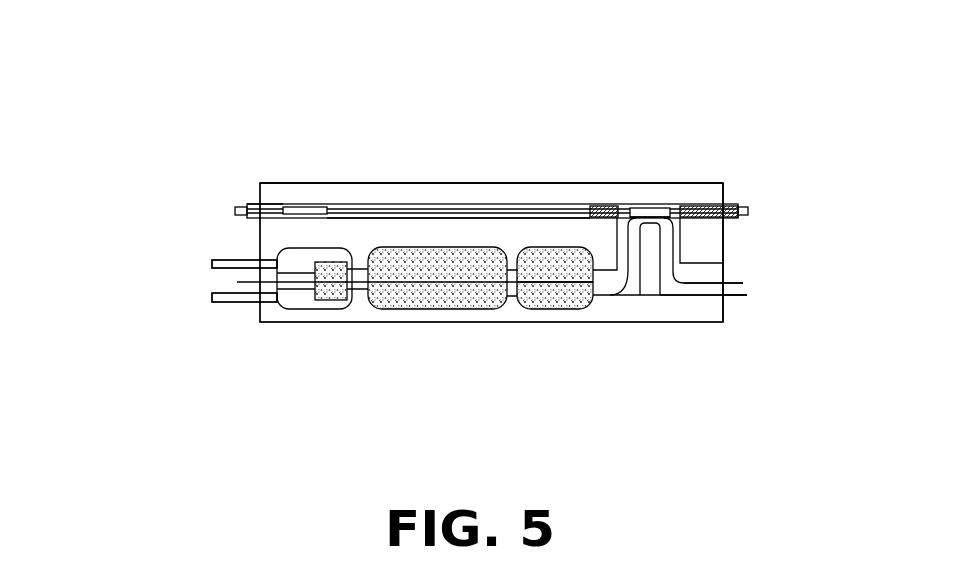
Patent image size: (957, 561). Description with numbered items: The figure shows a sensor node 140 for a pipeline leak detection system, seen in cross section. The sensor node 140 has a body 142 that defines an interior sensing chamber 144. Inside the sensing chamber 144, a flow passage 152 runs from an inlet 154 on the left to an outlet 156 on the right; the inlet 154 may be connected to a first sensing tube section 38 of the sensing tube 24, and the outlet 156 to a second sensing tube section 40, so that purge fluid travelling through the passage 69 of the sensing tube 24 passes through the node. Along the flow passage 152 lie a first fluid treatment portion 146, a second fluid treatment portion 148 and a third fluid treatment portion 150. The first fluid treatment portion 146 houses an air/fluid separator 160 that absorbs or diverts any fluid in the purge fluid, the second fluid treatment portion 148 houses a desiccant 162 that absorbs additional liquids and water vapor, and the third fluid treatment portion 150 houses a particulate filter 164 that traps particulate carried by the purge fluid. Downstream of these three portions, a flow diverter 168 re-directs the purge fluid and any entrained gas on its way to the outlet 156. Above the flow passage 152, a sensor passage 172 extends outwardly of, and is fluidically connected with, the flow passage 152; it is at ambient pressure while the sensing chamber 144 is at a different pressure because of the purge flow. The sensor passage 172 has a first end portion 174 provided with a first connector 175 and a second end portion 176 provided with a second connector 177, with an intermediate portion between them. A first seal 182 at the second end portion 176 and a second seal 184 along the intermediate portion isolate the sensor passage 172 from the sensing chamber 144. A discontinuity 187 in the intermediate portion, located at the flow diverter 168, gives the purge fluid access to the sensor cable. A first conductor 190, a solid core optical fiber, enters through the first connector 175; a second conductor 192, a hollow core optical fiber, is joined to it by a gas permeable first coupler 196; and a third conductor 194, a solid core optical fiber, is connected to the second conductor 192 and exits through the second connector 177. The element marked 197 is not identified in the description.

The sensing tube 24 is at (209, 328).
The first sensing tube section 38 is at (210, 307).
The second sensing tube section 40 is at (737, 316).
The passage 69 is at (222, 282).
The sensor node 140 is at (136, 116).
The body 142 is at (500, 324).
The sensing chamber 144 is at (628, 287).
The first fluid treatment portion 146 is at (288, 300).
The second fluid treatment portion 148 is at (389, 307).
The third fluid treatment portion 150 is at (537, 309).
The flow passage 152 is at (362, 273).
The inlet 154 is at (270, 276).
The outlet 156 is at (732, 266).
The air/fluid separator 160 is at (331, 292).
The desiccant 162 is at (455, 285).
The particulate filter 164 is at (580, 288).
The flow diverter 168 is at (650, 275).
The sensor passage 172 is at (453, 210).
The first end portion 174 is at (277, 207).
The first connector 175 is at (240, 217).
The second end portion 176 is at (722, 183).
The second connector 177 is at (740, 227).
The first seal 182 is at (723, 247).
The second seal 184 is at (600, 213).
The discontinuity 187 is at (628, 217).
The first conductor 190 is at (268, 207).
The second conductor 192 is at (532, 217).
The third conductor 194 is at (705, 206).
The first coupler 196 is at (303, 207).
The contact 197 is at (658, 217).